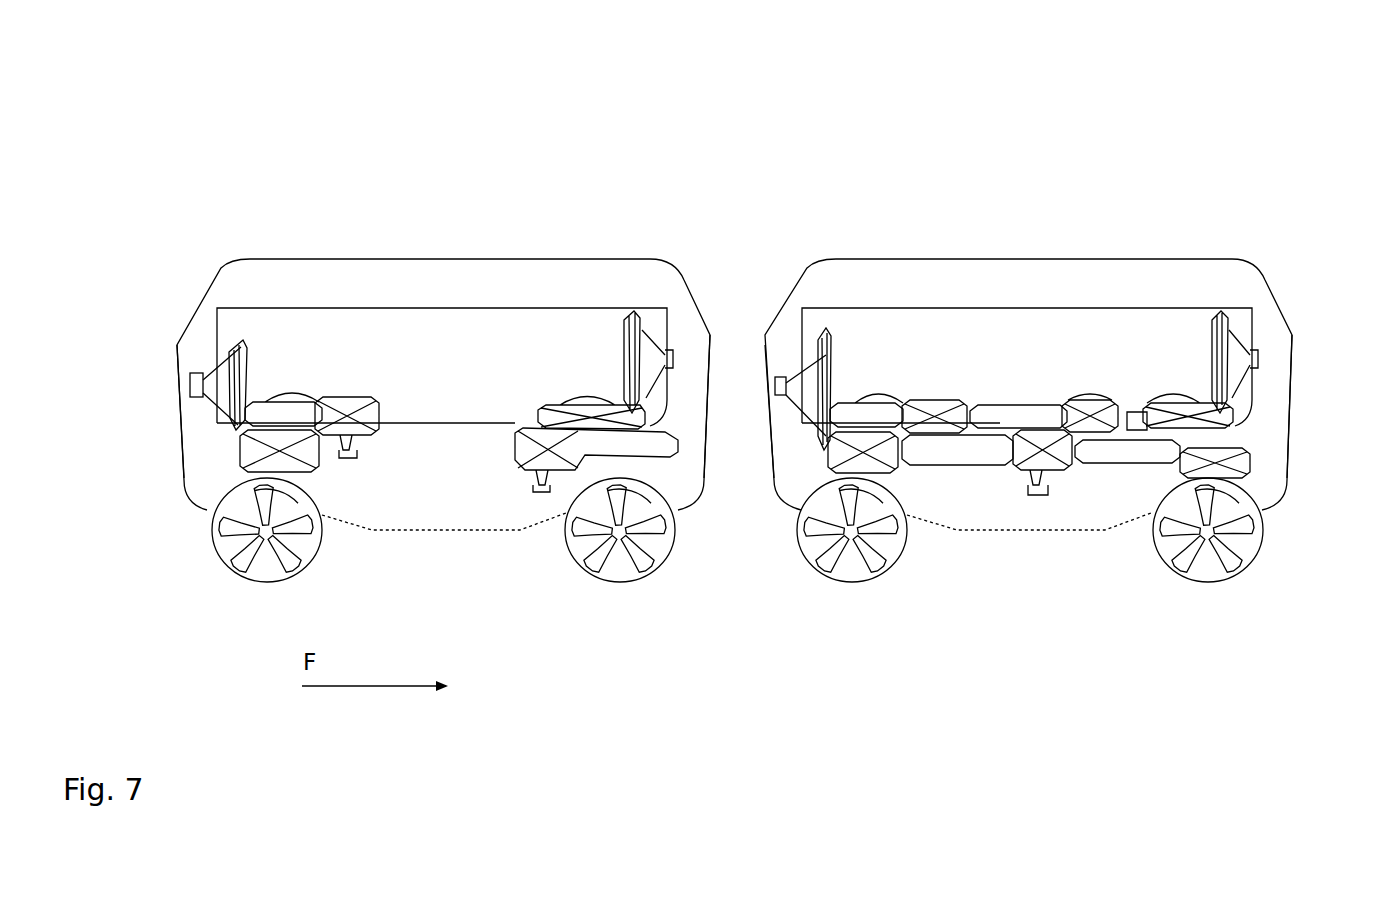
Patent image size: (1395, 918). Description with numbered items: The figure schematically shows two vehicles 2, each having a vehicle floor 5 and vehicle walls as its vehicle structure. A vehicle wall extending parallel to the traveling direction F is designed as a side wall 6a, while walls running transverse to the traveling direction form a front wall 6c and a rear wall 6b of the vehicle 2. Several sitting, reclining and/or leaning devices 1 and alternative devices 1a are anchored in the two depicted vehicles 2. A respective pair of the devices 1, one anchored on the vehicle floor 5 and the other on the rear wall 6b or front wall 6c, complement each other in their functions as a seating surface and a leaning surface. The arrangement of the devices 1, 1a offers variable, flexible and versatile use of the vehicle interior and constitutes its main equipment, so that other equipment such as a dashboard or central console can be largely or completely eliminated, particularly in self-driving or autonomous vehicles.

The sitting, reclining and/or leaning device 1 is at (275, 426).
The alternative device 1a is at (331, 378).
The vehicle 2 is at (286, 178).
The vehicle floor 5 is at (407, 493).
The side wall 6a is at (456, 332).
The rear wall 6b is at (203, 427).
The front wall 6c is at (779, 423).